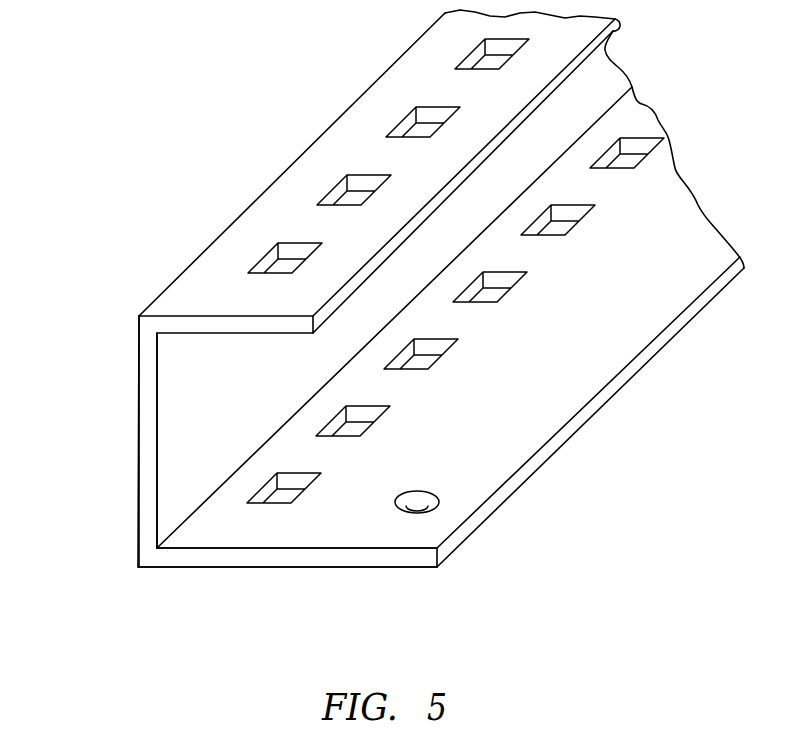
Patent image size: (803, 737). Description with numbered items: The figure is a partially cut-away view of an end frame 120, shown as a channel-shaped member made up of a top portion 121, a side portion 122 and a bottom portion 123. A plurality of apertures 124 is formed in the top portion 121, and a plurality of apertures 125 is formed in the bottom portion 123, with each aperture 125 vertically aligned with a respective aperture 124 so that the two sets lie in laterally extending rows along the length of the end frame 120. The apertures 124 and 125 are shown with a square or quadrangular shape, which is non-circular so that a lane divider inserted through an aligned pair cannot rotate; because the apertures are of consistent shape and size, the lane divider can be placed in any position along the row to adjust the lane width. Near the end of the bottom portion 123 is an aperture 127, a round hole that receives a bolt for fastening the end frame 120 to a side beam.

The end frame 120 is at (273, 583).
The top portion 121 is at (173, 300).
The side portion 122 is at (137, 497).
The bottom portion 123 is at (391, 568).
The apertures 124 is at (403, 120).
The apertures 125 is at (433, 355).
The aperture 127 is at (447, 487).